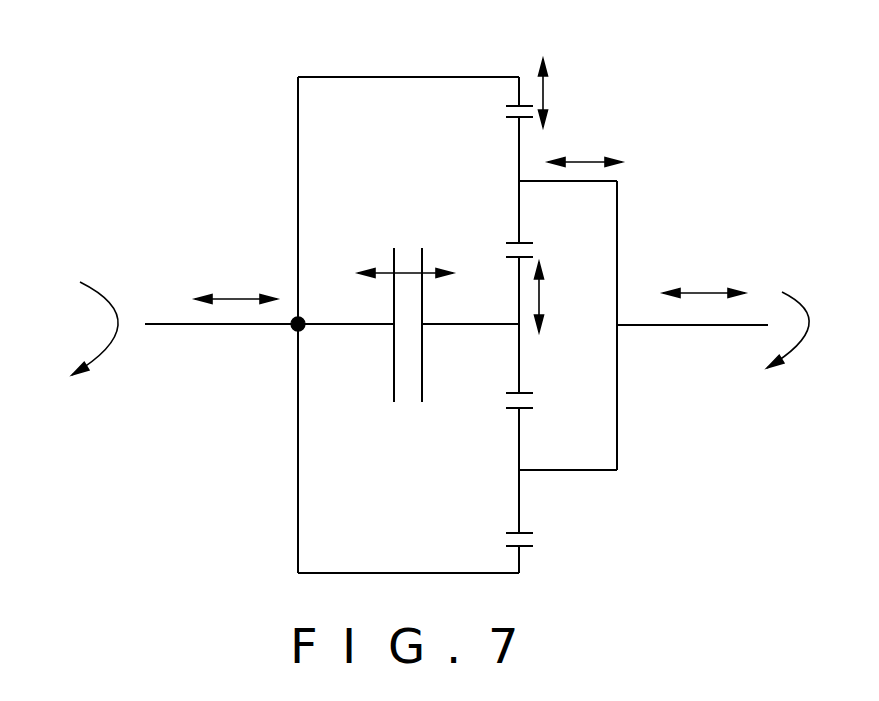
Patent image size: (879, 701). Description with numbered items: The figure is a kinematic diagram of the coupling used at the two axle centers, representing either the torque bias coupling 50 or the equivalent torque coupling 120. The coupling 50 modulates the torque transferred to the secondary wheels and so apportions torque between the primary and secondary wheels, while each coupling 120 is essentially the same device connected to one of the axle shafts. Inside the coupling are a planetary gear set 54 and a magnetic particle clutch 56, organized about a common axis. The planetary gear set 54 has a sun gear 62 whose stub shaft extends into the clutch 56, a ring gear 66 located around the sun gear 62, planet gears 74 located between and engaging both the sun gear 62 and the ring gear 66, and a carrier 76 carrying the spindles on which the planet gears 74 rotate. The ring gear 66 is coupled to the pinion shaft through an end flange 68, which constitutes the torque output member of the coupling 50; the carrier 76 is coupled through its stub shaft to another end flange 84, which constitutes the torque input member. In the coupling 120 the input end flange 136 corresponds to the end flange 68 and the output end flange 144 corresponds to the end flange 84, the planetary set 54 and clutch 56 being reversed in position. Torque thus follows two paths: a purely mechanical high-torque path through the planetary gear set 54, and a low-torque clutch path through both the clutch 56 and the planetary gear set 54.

The torque bias coupling 50 is at (296, 325).
The torque coupling 120 is at (273, 192).
The planetary gear set 54 is at (532, 148).
The magnetic particle clutch 56 is at (408, 255).
The sun gear 62 is at (519, 347).
The ring gear 66 is at (520, 87).
The end flange 68 is at (188, 343).
The input end flange 136 is at (220, 326).
The planet gears 74 is at (519, 162).
The carrier 76 is at (617, 214).
The end flange 84 is at (713, 343).
The output end flange 144 is at (653, 327).